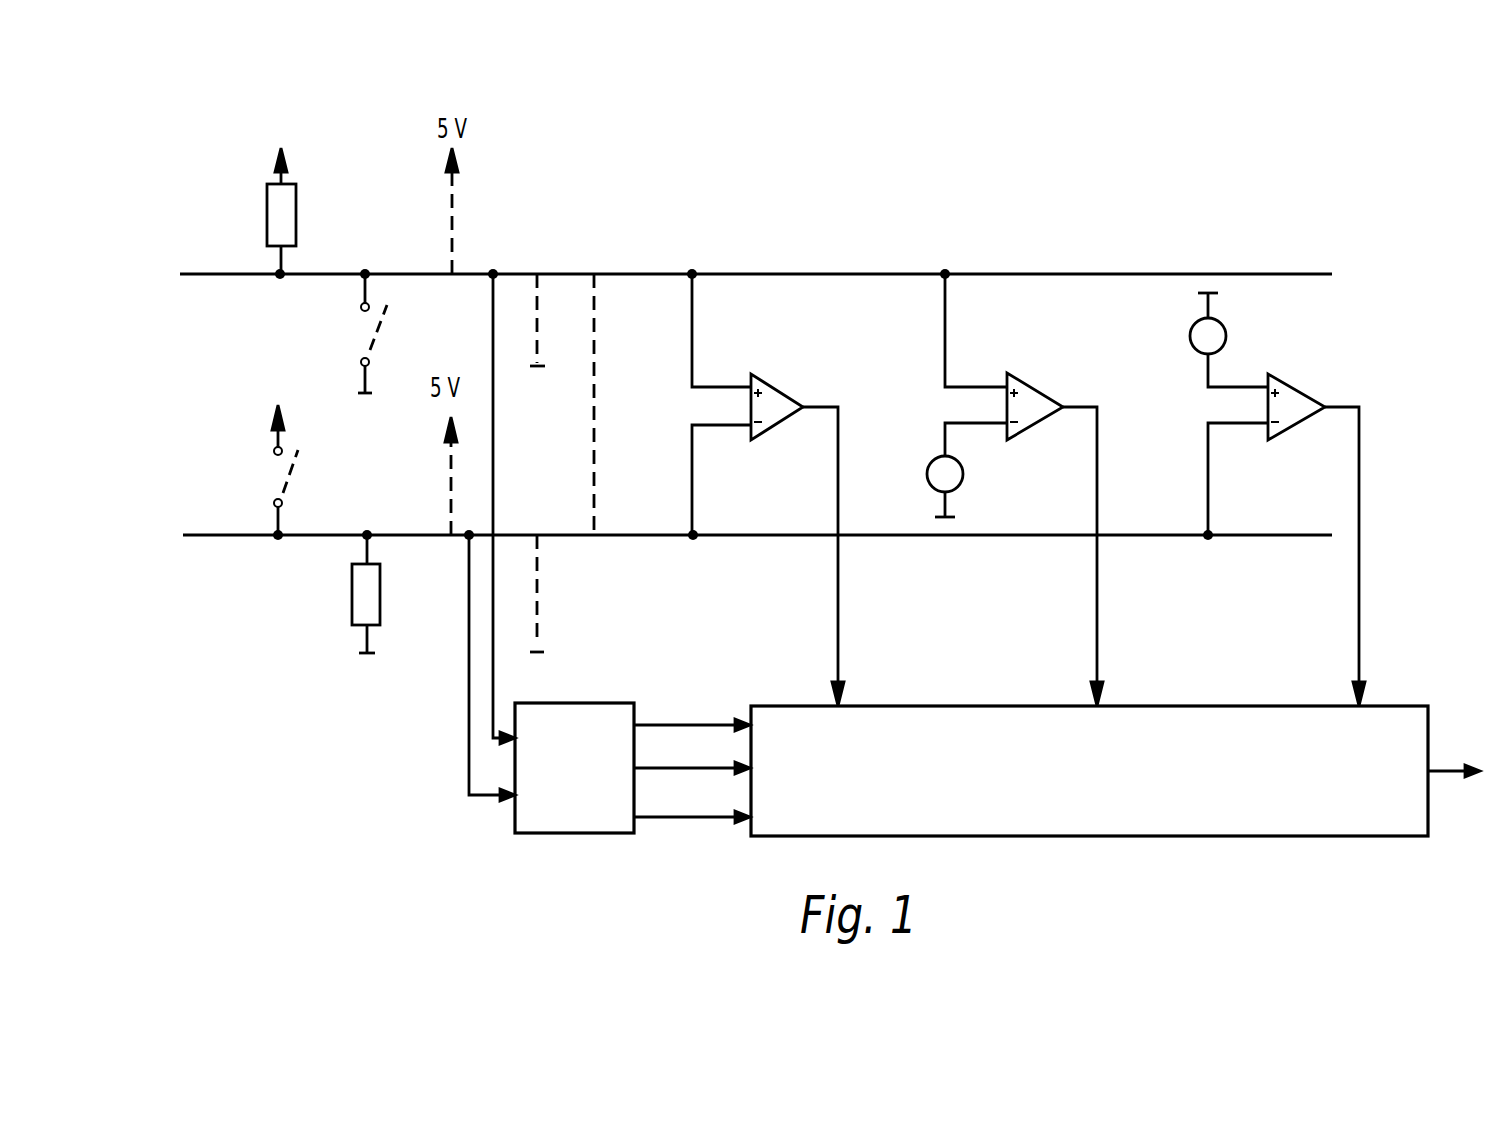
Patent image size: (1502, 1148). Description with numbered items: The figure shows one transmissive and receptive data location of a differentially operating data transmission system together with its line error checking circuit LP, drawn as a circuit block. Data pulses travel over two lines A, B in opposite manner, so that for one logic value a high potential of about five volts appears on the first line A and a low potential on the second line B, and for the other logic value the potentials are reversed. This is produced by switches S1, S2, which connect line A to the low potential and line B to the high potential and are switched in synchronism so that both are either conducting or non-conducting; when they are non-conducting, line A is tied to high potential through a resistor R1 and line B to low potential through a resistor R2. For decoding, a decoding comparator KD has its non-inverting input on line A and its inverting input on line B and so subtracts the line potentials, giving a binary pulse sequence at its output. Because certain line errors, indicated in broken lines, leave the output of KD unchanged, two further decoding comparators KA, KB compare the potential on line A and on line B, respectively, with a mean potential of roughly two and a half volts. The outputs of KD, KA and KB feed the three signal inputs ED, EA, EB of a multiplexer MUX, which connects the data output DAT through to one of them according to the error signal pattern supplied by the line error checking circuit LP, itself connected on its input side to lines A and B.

The first line A is at (758, 275).
The second line B is at (759, 537).
The resistor R1 is at (262, 193).
The resistor R2 is at (343, 594).
The switch S1 is at (385, 333).
The switch S2 is at (297, 453).
The decoding comparator KD is at (747, 404).
The decoding comparator KA is at (995, 395).
The decoding comparator KB is at (1260, 414).
The signal input ED is at (844, 556).
The signal input EA is at (1104, 556).
The signal input EB is at (1367, 556).
The line error checking circuit LP is at (609, 553).
The multiplexer MUX is at (1089, 771).
The data output DAT is at (1455, 789).